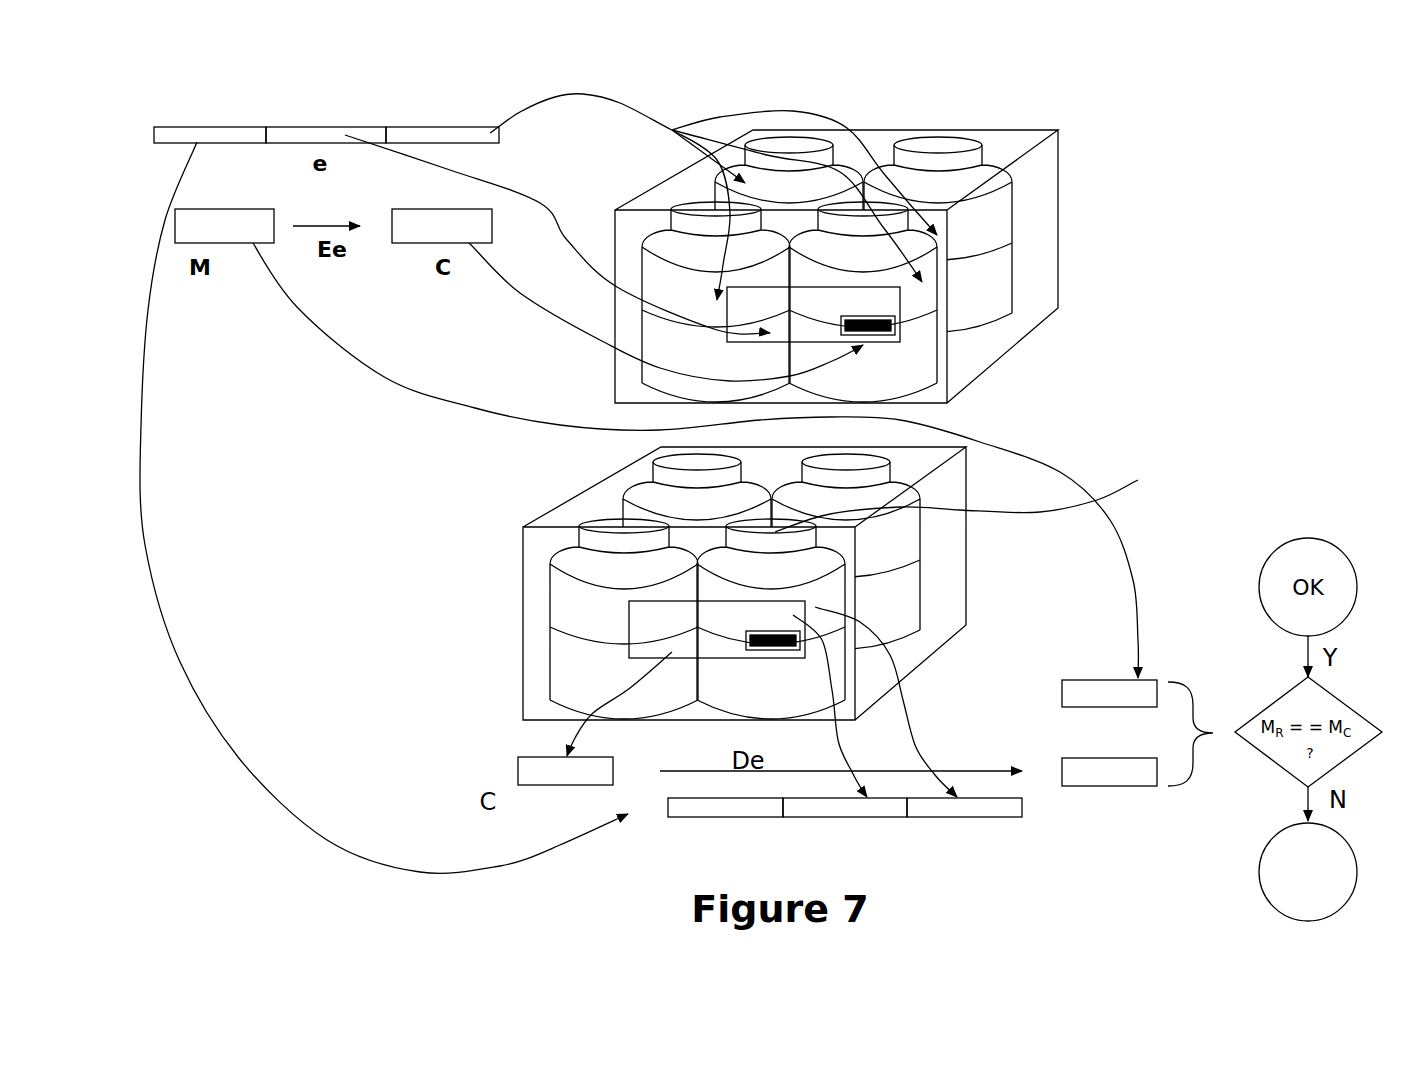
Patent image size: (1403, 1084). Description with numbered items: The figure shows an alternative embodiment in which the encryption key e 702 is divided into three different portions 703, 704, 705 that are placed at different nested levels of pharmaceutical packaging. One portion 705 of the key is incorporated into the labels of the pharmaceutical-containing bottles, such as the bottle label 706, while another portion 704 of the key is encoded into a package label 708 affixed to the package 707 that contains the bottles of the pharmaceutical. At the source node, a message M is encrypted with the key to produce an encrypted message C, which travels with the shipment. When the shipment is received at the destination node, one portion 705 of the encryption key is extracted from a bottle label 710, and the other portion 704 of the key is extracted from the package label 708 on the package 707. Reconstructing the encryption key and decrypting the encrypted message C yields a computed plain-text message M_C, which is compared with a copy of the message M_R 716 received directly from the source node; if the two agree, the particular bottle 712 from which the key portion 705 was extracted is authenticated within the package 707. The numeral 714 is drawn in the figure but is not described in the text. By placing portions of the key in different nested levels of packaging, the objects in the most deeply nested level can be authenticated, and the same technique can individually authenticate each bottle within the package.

The encryption key e 702 is at (588, 482).
The first portion of the encryption key 703 is at (207, 122).
The second portion of the encryption key 704 is at (303, 122).
The third portion of the encryption key 705 is at (447, 122).
The bottle label 706 is at (900, 320).
The package 707 is at (1060, 183).
The package label 708 is at (757, 343).
The bottle label 710 is at (773, 652).
The bottle 712 is at (975, 496).
The computed message value 714 is at (1140, 786).
The received message M_R 716 is at (1075, 678).